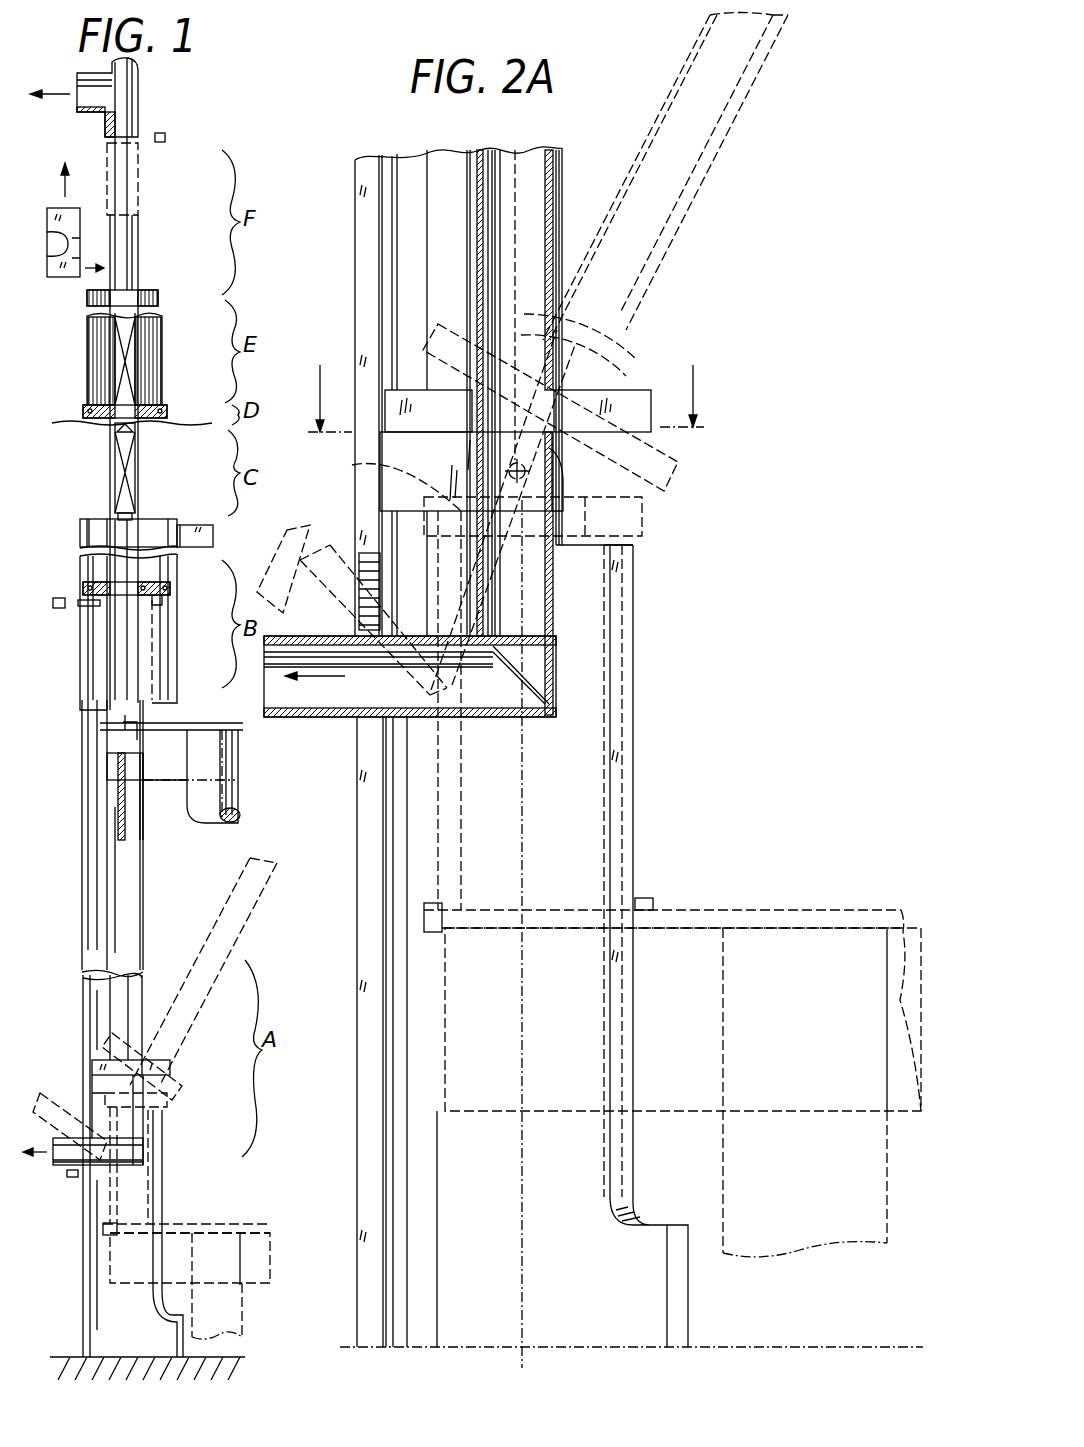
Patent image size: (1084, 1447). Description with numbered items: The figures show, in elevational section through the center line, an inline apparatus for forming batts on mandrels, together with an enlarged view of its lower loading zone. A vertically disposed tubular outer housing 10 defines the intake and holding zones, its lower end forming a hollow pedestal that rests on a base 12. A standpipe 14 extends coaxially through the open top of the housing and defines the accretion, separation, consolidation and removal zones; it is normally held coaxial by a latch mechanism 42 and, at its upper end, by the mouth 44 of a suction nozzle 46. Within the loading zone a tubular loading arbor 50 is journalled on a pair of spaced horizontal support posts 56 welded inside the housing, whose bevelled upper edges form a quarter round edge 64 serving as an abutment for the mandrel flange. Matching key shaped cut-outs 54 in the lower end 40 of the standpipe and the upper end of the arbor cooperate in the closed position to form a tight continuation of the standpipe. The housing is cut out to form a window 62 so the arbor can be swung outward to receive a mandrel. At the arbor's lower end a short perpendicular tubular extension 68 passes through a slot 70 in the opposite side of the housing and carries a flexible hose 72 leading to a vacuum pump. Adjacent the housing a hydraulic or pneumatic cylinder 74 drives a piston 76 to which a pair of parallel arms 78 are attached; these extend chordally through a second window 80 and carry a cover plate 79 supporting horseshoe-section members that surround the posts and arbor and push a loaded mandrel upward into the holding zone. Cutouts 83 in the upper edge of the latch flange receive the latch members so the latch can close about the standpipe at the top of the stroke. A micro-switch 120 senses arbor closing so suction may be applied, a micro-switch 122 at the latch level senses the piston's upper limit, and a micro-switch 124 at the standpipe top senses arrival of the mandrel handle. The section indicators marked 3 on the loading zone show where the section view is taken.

In FIG. 1, the tubular outer housing 10 is at (92, 840).
In FIG. 1, the base 12 is at (141, 1336).
In FIG. 1, the standpipe 14 is at (125, 648).
In FIG. 1, the lower end of the standpipe 40 is at (107, 765).
In FIG. 1, the latch mechanism 42 is at (80, 592).
In FIG. 1, the mouth of suction nozzle 44 is at (138, 98).
In FIG. 1, the suction nozzle 46 is at (77, 110).
In FIG. 1, the tubular loading arbor 50 is at (258, 887).
In FIG. 2A, the tubular loading arbor 50 is at (522, 354).
In FIG. 1, the key shaped cut-outs 54 is at (137, 735).
In FIG. 2A, the horizontal support posts 56 is at (445, 462).
In FIG. 1, the window 62 is at (130, 980).
In FIG. 2A, the window 62 is at (620, 545).
In FIG. 2A, the quarter round edge 64 is at (556, 455).
In FIG. 2A, the perpendicular tubular extension 68 is at (340, 706).
In FIG. 2A, the slot 70 is at (386, 735).
In FIG. 2A, the flexible hose 72 is at (295, 718).
In FIG. 2A, the hydraulic or pneumatic cylinder 74 is at (848, 1314).
In FIG. 1, the piston 76 is at (255, 1262).
In FIG. 2A, the piston 76 is at (876, 1025).
In FIG. 2A, the parallel arms 78 is at (700, 910).
In FIG. 2A, the cover plate 79 is at (645, 898).
In FIG. 2A, the second window 80 is at (634, 829).
In FIG. 1, the cutouts 83 is at (83, 605).
In FIG. 2A, the cutouts 83 is at (388, 487).
In FIG. 1, the micro-switch 120 is at (72, 1178).
In FIG. 1, the micro-switch 122 is at (53, 598).
In FIG. 1, the micro-switch 124 is at (165, 135).
In FIG. 2A, the section line 3- 3 is at (506, 412).